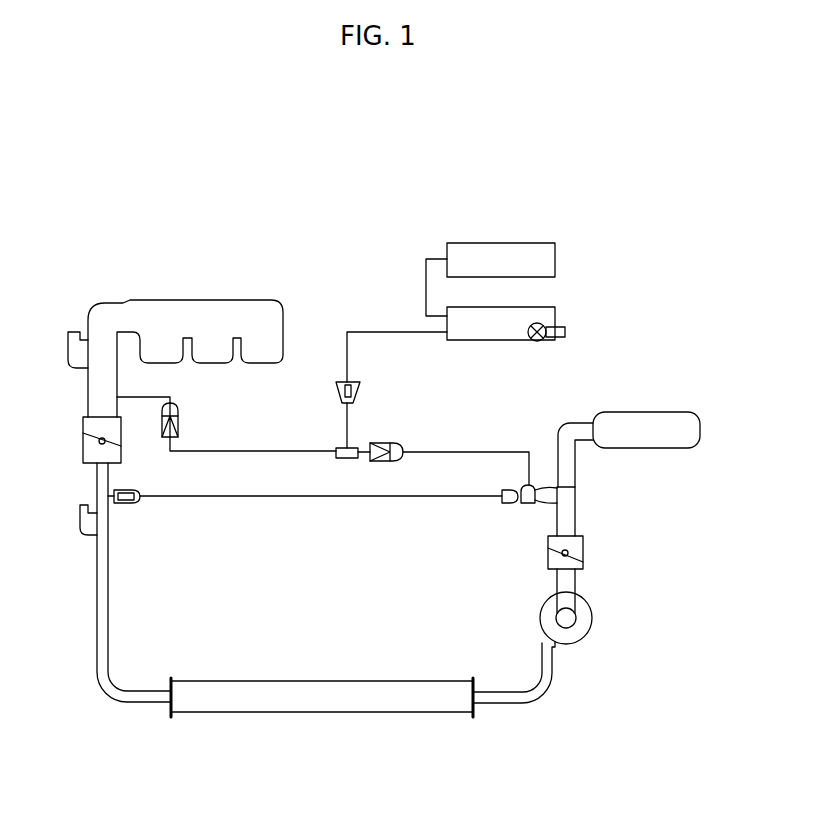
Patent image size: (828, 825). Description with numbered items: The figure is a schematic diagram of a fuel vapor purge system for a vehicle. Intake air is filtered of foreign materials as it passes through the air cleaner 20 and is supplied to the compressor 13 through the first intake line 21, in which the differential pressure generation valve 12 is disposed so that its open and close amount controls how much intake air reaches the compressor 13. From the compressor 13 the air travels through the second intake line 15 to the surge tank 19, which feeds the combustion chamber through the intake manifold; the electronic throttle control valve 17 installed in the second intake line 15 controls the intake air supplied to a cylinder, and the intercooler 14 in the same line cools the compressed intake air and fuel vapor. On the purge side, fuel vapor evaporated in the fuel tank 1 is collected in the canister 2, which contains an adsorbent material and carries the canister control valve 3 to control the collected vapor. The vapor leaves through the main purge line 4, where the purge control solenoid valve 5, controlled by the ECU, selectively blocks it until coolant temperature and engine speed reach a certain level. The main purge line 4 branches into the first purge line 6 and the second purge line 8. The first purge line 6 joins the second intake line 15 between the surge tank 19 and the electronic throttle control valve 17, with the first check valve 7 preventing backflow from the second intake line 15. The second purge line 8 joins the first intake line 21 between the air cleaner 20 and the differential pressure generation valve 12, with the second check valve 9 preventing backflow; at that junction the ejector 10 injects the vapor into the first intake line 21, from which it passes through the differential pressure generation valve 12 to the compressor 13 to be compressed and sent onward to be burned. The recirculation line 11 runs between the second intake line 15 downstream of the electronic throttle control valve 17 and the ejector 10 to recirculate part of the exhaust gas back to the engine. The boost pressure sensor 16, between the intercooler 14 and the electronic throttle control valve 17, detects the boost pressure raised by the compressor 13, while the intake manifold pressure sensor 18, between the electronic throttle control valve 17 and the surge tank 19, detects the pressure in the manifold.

The fuel tank 1 is at (555, 259).
The canister 2 is at (482, 343).
The canister control valve 3 is at (537, 343).
The main purge line 4 is at (381, 331).
The purge control solenoid valve 5 is at (336, 392).
The first purge line 6 is at (263, 450).
The first check valve 7 is at (178, 418).
The second purge line 8 is at (446, 451).
The second check valve 9 is at (398, 442).
The ejector 10 is at (524, 504).
The recirculation line 11 is at (233, 498).
The differential pressure generation valve 12 is at (583, 546).
The compressor 13 is at (582, 624).
The intercooler 14 is at (386, 713).
The second intake line 15 is at (138, 703).
The boost pressure sensor 16 is at (80, 522).
The electronic throttle control valve 17 is at (83, 452).
The intake manifold pressure sensor 18 is at (73, 331).
The surge tank 19 is at (181, 304).
The air cleaner 20 is at (673, 420).
The first intake line 21 is at (570, 466).